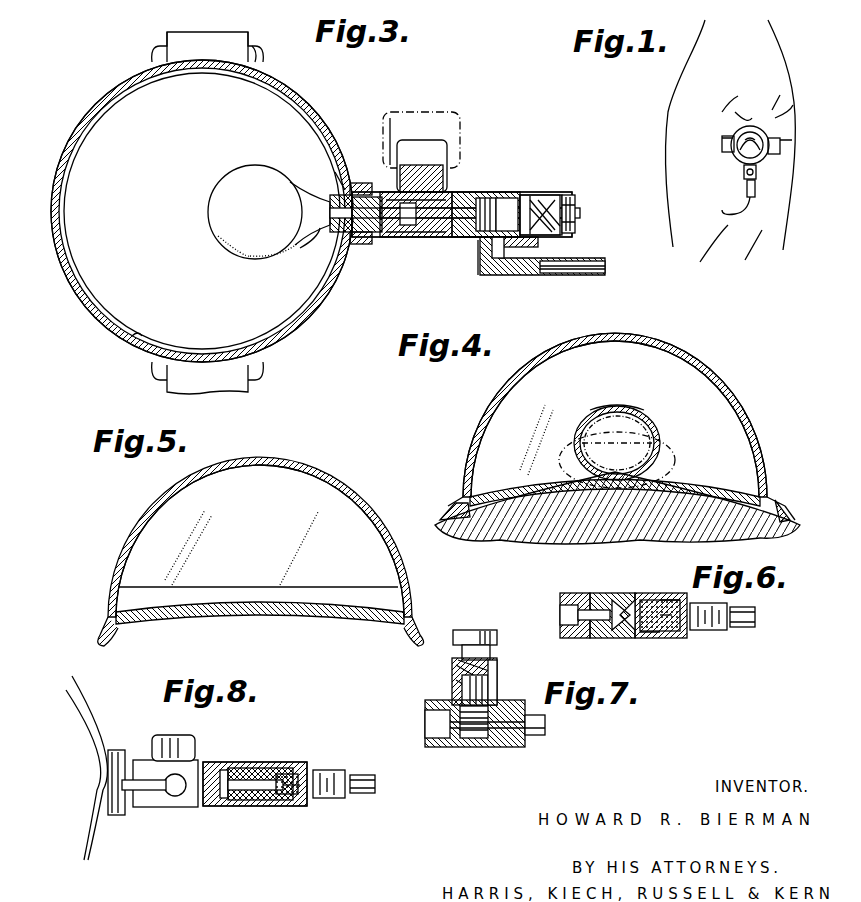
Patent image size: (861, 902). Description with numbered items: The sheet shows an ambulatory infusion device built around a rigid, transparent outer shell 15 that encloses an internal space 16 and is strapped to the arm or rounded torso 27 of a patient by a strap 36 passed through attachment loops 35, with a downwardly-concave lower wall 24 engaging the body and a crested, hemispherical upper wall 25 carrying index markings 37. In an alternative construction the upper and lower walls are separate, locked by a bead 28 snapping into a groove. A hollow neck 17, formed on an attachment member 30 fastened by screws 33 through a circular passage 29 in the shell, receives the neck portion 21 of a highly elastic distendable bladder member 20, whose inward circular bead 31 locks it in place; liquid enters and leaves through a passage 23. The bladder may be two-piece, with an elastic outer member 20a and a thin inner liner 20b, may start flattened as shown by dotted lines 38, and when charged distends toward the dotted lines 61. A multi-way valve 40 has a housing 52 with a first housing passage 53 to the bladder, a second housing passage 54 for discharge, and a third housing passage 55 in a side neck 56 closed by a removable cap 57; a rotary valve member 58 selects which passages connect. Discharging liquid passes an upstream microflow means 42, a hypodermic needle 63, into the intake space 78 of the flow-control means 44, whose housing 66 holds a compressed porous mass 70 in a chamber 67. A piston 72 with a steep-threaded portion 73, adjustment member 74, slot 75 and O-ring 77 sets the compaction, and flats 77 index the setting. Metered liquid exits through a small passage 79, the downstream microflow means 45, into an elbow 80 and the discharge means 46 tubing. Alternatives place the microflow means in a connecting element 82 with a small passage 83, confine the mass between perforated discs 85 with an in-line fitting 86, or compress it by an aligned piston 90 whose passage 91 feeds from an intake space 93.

In FIG. 3, the outer shell 15 is at (128, 78).
In FIG. 1, the outer shell 15 is at (751, 122).
In FIG. 4, the outer shell 15 is at (742, 392).
In FIG. 8, the outer shell 15 is at (104, 724).
In FIG. 3, the internal space 16 is at (112, 116).
In FIG. 4, the internal space 16 is at (690, 362).
In FIG. 5, the internal space 16 is at (146, 534).
In FIG. 3, the hollow neck 17 is at (322, 195).
In FIG. 3, the distendable bladder member 20 is at (210, 200).
In FIG. 4, the distendable bladder member 20 is at (576, 416).
In FIG. 4, the outer member 20a is at (612, 406).
In FIG. 4, the inner liner 20b is at (640, 430).
In FIG. 3, the neck portion 21 is at (318, 240).
In FIG. 3, the passage 23 is at (392, 234).
In FIG. 3, the lower wall 24 is at (103, 300).
In FIG. 4, the lower wall 24 is at (510, 490).
In FIG. 5, the lower wall 24 is at (316, 622).
In FIG. 4, the upper wall 25 is at (628, 334).
In FIG. 5, the upper wall 25 is at (146, 505).
In FIG. 1, the arm, extremity or rounded torso 27 is at (770, 165).
In FIG. 4, the arm, extremity or rounded torso 27 is at (795, 518).
In FIG. 5, the bead 28 is at (116, 590).
In FIG. 3, the circular passage 29 is at (362, 246).
In FIG. 3, the attachment member 30 is at (338, 170).
In FIG. 3, the circular bead 31 is at (332, 213).
In FIG. 3, the screws 33 is at (364, 182).
In FIG. 3, the attachment loops 35 is at (264, 60).
In FIG. 1, the attachment loops 35 is at (730, 142).
In FIG. 4, the attachment loops 35 is at (452, 496).
In FIG. 3, the strap 36 is at (208, 34).
In FIG. 1, the strap 36 is at (782, 146).
In FIG. 4, the strap 36 is at (448, 515).
In FIG. 1, the index rings or markings 37 is at (760, 136).
In FIG. 4, the dotted lines 38 is at (668, 460).
In FIG. 3, the multi-way valve 40 is at (385, 182).
In FIG. 1, the multi-way valve 40 is at (740, 174).
In FIG. 8, the multi-way valve 40 is at (174, 810).
In FIG. 3, the upstream microflow means 42 is at (446, 240).
In FIG. 6, the upstream microflow means 42 is at (590, 604).
In FIG. 3, the flow-control means 44 is at (514, 190).
In FIG. 1, the flow-control means 44 is at (760, 190).
In FIG. 8, the flow-control means 44 is at (302, 810).
In FIG. 3, the downstream microflow means 45 is at (482, 254).
In FIG. 3, the discharge means 46 is at (592, 258).
In FIG. 1, the discharge means 46 is at (718, 212).
In FIG. 6, the discharge means 46 is at (758, 628).
In FIG. 8, the discharge means 46 is at (364, 772).
In FIG. 3, the housing 52 is at (414, 238).
In FIG. 3, the first housing passage 53 is at (408, 240).
In FIG. 3, the second housing passage 54 is at (432, 240).
In FIG. 3, the third housing passage 55 is at (420, 166).
In FIG. 3, the side neck 56 is at (392, 166).
In FIG. 3, the removable cap 57 is at (440, 165).
In FIG. 3, the rotary valve member 58 is at (448, 190).
In FIG. 3, the dotted lines 61 is at (138, 340).
In FIG. 3, the hypodermic needle 63 is at (458, 238).
In FIG. 3, the housing 66 is at (542, 194).
In FIG. 6, the housing 66 is at (606, 596).
In FIG. 8, the housing 66 is at (220, 808).
In FIG. 3, the chamber 67 is at (504, 196).
In FIG. 6, the chamber 67 is at (666, 600).
In FIG. 7, the chamber 67 is at (462, 694).
In FIG. 8, the chamber 67 is at (292, 770).
In FIG. 3, the porous mass of material 70 is at (490, 192).
In FIG. 6, the porous mass of material 70 is at (660, 632).
In FIG. 7, the porous mass of material 70 is at (476, 740).
In FIG. 8, the porous mass of material 70 is at (284, 808).
In FIG. 3, the piston 72 is at (524, 200).
In FIG. 7, the piston 72 is at (498, 706).
In FIG. 3, the steep-threaded portion 73 is at (565, 196).
In FIG. 7, the steep-threaded portion 73 is at (455, 668).
In FIG. 3, the adjustment member 74 is at (576, 222).
In FIG. 7, the adjustment member 74 is at (473, 633).
In FIG. 3, the slot 75 is at (576, 210).
In FIG. 3, the O-ring 77 is at (516, 246).
In FIG. 3, the intake space 78 is at (478, 194).
In FIG. 7, the intake space 78 is at (450, 746).
In FIG. 3, the passage 79 is at (464, 240).
In FIG. 7, the passage 79 is at (508, 746).
In FIG. 3, the elbow 80 is at (496, 272).
In FIG. 6, the connecting element 82 is at (560, 600).
In FIG. 6, the small passage 83 is at (630, 602).
In FIG. 6, the perforated discs 85 is at (642, 638).
In FIG. 6, the in-line fitting 86 is at (722, 632).
In FIG. 8, the in-line fitting 86 is at (338, 800).
In FIG. 8, the piston 90 is at (266, 768).
In FIG. 8, the passage 91 is at (252, 808).
In FIG. 8, the intake space 93 is at (224, 770).